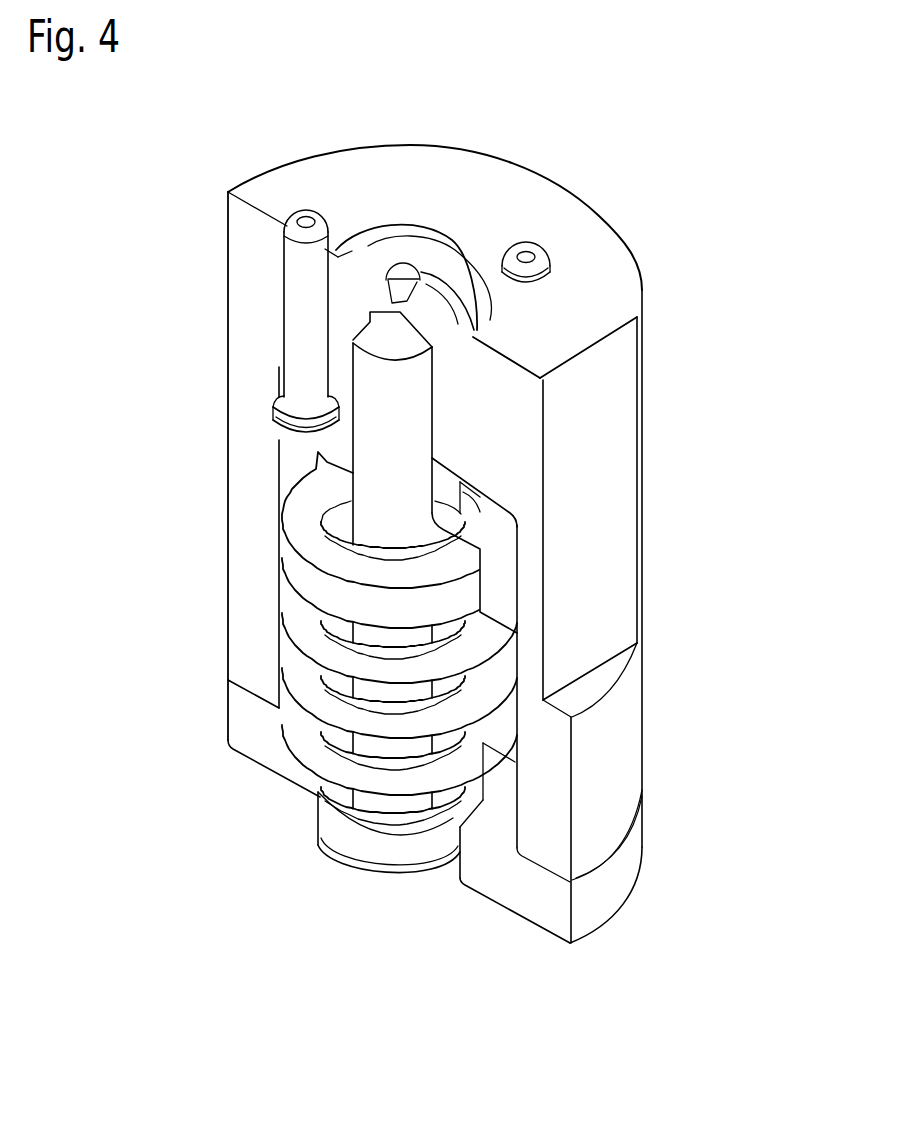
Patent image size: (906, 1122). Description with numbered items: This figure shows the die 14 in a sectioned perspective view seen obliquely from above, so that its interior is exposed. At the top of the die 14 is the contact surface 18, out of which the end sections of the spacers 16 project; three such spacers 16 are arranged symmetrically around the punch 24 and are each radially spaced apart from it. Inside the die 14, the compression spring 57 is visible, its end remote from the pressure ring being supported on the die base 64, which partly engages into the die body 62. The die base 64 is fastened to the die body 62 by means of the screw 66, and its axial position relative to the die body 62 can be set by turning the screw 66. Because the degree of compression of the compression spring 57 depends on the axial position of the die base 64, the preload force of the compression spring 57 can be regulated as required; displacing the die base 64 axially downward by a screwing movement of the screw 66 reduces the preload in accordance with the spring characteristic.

The die 14 is at (675, 942).
The spacers 16 is at (300, 313).
The contact surface 18 is at (595, 292).
The punch 24 is at (453, 263).
The compression spring 57 is at (317, 646).
The die body 62 is at (595, 605).
The die base 64 is at (252, 730).
The screw 66 is at (350, 845).